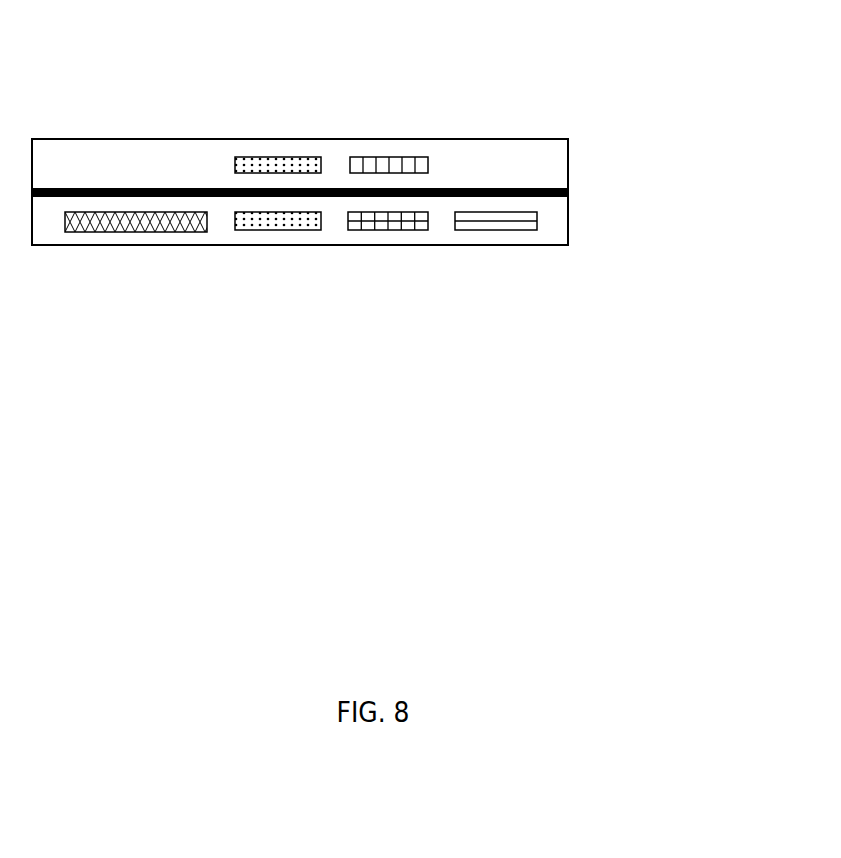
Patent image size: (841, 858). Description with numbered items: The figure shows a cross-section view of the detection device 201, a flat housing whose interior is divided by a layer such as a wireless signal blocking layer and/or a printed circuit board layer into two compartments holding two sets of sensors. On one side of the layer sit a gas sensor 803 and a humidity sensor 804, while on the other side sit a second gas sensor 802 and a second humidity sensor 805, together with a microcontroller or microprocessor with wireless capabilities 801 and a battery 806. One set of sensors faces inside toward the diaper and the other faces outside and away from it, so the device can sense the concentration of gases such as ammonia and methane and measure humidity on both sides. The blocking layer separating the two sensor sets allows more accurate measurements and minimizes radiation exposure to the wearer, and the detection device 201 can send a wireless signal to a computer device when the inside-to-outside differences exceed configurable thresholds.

The detection device 201 is at (567, 226).
The microcontroller or microprocessor with wireless capabilities 801 is at (69, 231).
The gas sensor 802 is at (239, 231).
The gas sensor 803 is at (240, 157).
The humidity sensor 804 is at (355, 157).
The humidity sensor 805 is at (352, 231).
The battery 806 is at (459, 231).